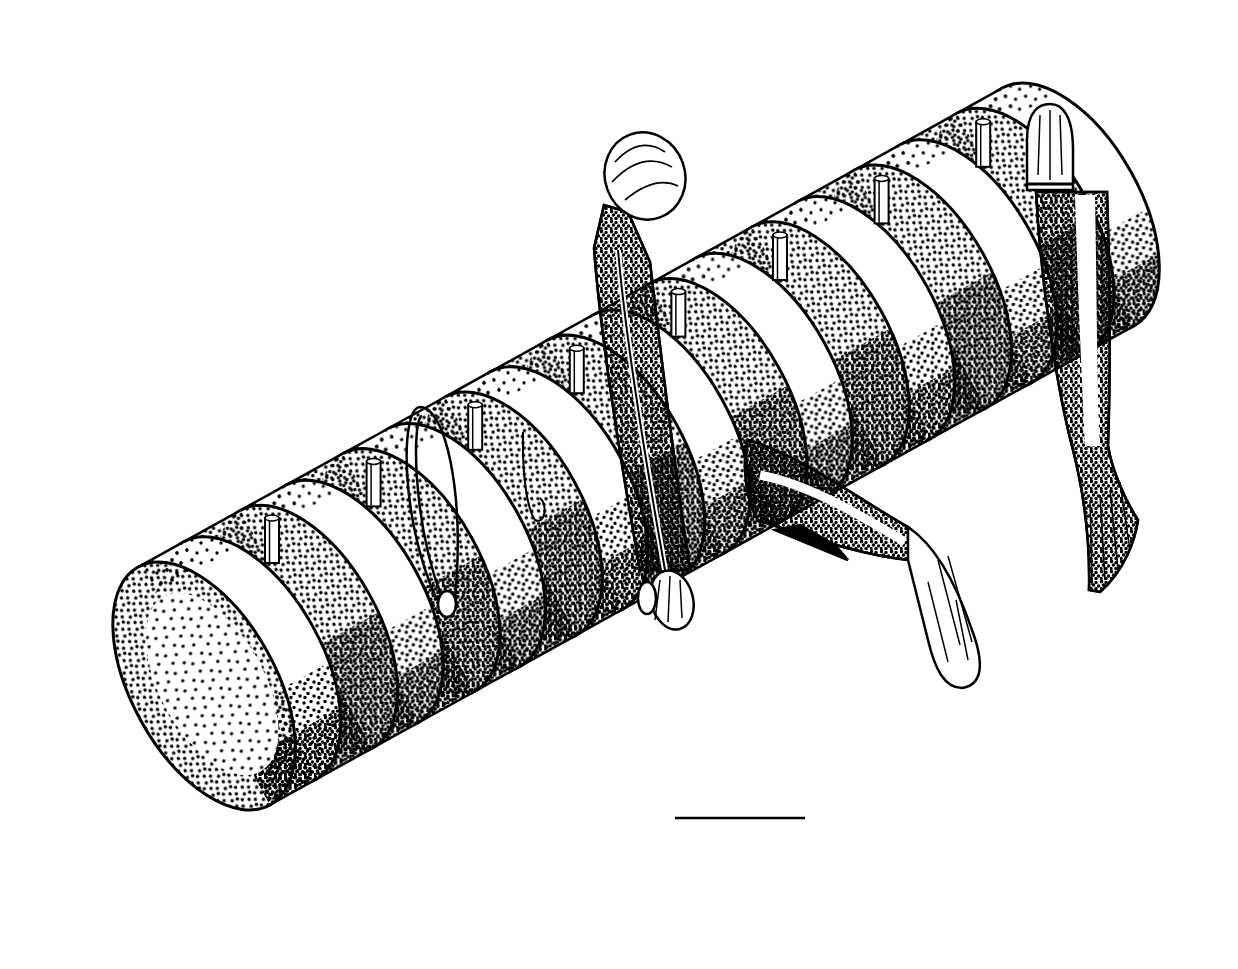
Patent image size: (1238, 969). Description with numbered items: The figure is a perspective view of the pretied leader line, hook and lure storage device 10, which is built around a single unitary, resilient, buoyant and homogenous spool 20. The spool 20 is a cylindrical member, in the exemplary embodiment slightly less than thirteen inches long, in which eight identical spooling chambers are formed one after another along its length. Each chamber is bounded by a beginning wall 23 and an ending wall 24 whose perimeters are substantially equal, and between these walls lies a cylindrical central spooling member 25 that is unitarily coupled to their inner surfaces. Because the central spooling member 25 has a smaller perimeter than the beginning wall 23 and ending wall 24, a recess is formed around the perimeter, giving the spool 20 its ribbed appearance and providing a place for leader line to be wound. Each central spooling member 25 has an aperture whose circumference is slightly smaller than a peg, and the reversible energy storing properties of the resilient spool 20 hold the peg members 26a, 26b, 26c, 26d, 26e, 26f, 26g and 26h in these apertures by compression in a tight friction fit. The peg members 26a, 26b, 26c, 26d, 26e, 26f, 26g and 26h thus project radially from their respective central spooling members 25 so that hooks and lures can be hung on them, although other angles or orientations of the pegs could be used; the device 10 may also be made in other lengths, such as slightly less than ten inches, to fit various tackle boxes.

The pretied leader line, hook and lure storage device 10 is at (338, 207).
The spool 20 is at (1120, 180).
The beginning wall 23 is at (302, 790).
The ending wall 24 is at (413, 722).
The central spooling member 25 is at (363, 762).
The peg member 26a is at (266, 518).
The peg member 26b is at (370, 460).
The peg member 26c is at (474, 403).
The peg member 26d is at (577, 346).
The peg member 26e is at (680, 289).
The peg member 26f is at (778, 233).
The peg member 26g is at (878, 176).
The peg member 26h is at (984, 120).